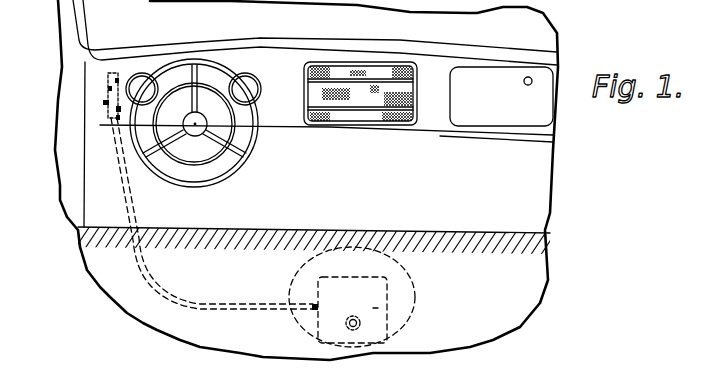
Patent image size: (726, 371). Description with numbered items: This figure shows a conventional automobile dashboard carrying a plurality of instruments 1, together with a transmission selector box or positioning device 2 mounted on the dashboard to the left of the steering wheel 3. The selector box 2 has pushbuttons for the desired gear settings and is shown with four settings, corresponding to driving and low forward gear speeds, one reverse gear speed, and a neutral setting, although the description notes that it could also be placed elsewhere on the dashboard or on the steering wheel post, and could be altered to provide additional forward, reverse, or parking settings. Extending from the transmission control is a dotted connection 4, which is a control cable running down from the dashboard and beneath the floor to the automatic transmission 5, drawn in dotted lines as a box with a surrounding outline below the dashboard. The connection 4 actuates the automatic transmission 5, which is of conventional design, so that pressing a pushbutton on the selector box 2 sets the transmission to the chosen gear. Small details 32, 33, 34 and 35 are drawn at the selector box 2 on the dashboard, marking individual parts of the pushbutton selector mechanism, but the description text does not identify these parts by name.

The instruments 1 is at (258, 96).
The transmission selector box 2 is at (108, 103).
The steering wheel 3 is at (212, 187).
The connection 4 is at (123, 198).
The automatic transmission 5 is at (387, 308).
The switch body 32 is at (114, 92).
The switch lever 33 is at (112, 73).
The switch arm 34 is at (116, 103).
The switch terminal 35 is at (107, 117).